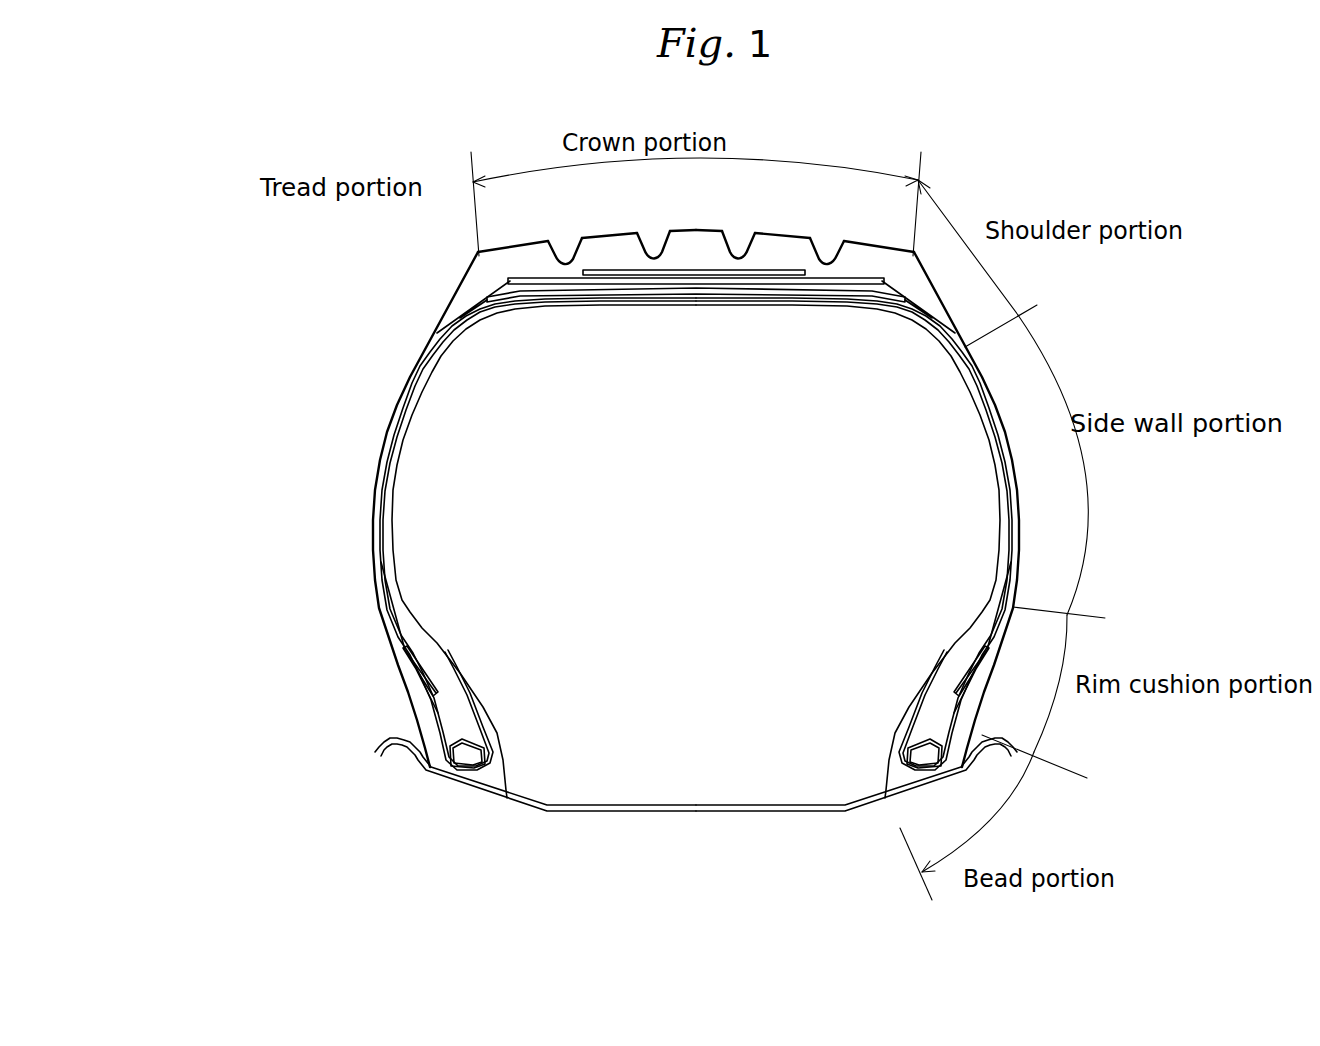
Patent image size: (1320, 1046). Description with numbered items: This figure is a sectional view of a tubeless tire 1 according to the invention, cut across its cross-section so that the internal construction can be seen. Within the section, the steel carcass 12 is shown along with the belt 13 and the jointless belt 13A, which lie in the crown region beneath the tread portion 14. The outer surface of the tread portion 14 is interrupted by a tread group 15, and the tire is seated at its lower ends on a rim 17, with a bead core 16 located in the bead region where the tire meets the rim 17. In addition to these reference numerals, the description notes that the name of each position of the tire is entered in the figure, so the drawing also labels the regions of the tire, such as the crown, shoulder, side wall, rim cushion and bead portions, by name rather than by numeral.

The tubeless tire 1 is at (378, 456).
The steel carcass 12 is at (464, 337).
The belt 13 is at (733, 283).
The jointless belt 13A is at (667, 263).
The tread portion 14 is at (601, 236).
The tread group 15 is at (827, 236).
The bead core 16 is at (923, 752).
The rim 17 is at (658, 812).